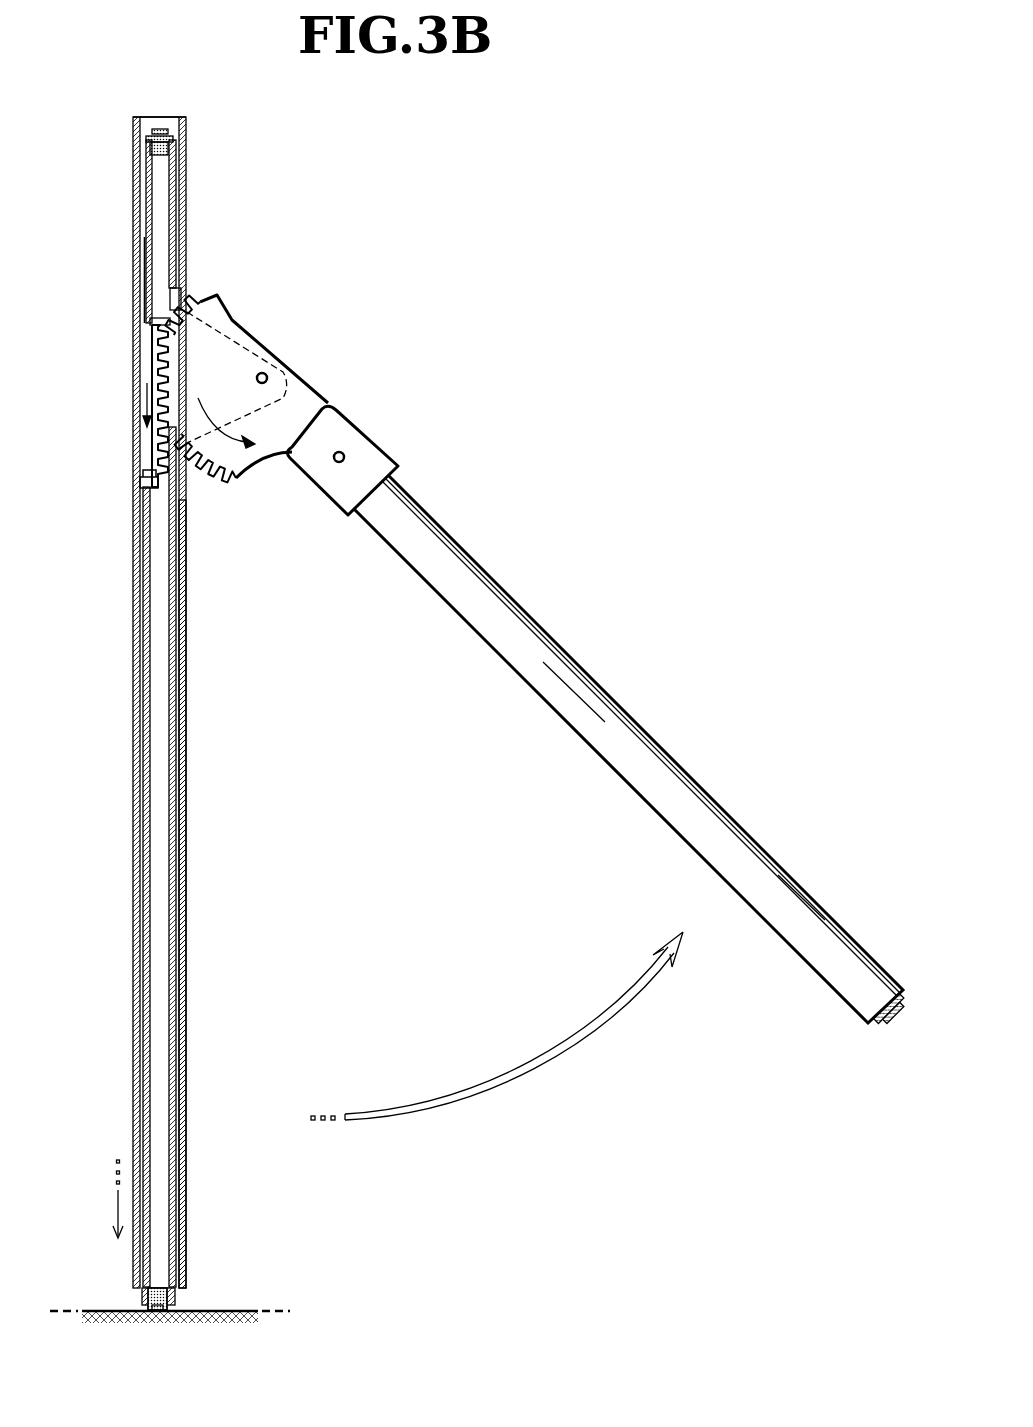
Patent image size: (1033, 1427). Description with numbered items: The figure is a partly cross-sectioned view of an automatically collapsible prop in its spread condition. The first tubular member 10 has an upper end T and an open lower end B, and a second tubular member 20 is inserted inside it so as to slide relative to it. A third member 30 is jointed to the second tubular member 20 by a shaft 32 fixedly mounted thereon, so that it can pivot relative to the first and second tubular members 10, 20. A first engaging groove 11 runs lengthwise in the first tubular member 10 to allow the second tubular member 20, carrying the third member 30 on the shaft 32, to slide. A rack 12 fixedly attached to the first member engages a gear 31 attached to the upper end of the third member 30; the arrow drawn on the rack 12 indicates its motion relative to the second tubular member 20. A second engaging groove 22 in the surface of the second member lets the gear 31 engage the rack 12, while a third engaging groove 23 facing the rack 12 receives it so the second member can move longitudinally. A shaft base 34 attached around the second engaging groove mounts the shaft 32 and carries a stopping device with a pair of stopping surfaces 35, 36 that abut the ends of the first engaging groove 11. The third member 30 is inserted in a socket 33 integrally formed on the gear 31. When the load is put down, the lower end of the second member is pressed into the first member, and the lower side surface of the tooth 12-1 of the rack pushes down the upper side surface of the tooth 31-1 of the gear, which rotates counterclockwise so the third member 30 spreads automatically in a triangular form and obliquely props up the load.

The first tubular member 10 is at (134, 120).
The first engaging groove 11 is at (185, 518).
The rack 12 is at (140, 362).
The tooth of the rack 12-1 is at (140, 470).
The second tubular member 20 is at (148, 190).
The second engaging groove 22 is at (170, 300).
The third engaging groove 23 is at (144, 250).
The third member 30 is at (530, 610).
The gear 31 is at (222, 300).
The tooth of the gear 31-1 is at (200, 290).
The shaft 32 is at (270, 376).
The socket 33 is at (368, 442).
The shaft base 34 is at (310, 323).
The stopping surface 35 is at (200, 478).
The stopping surface 36 is at (186, 292).
The upper end T is at (163, 117).
The lower end B is at (137, 1290).